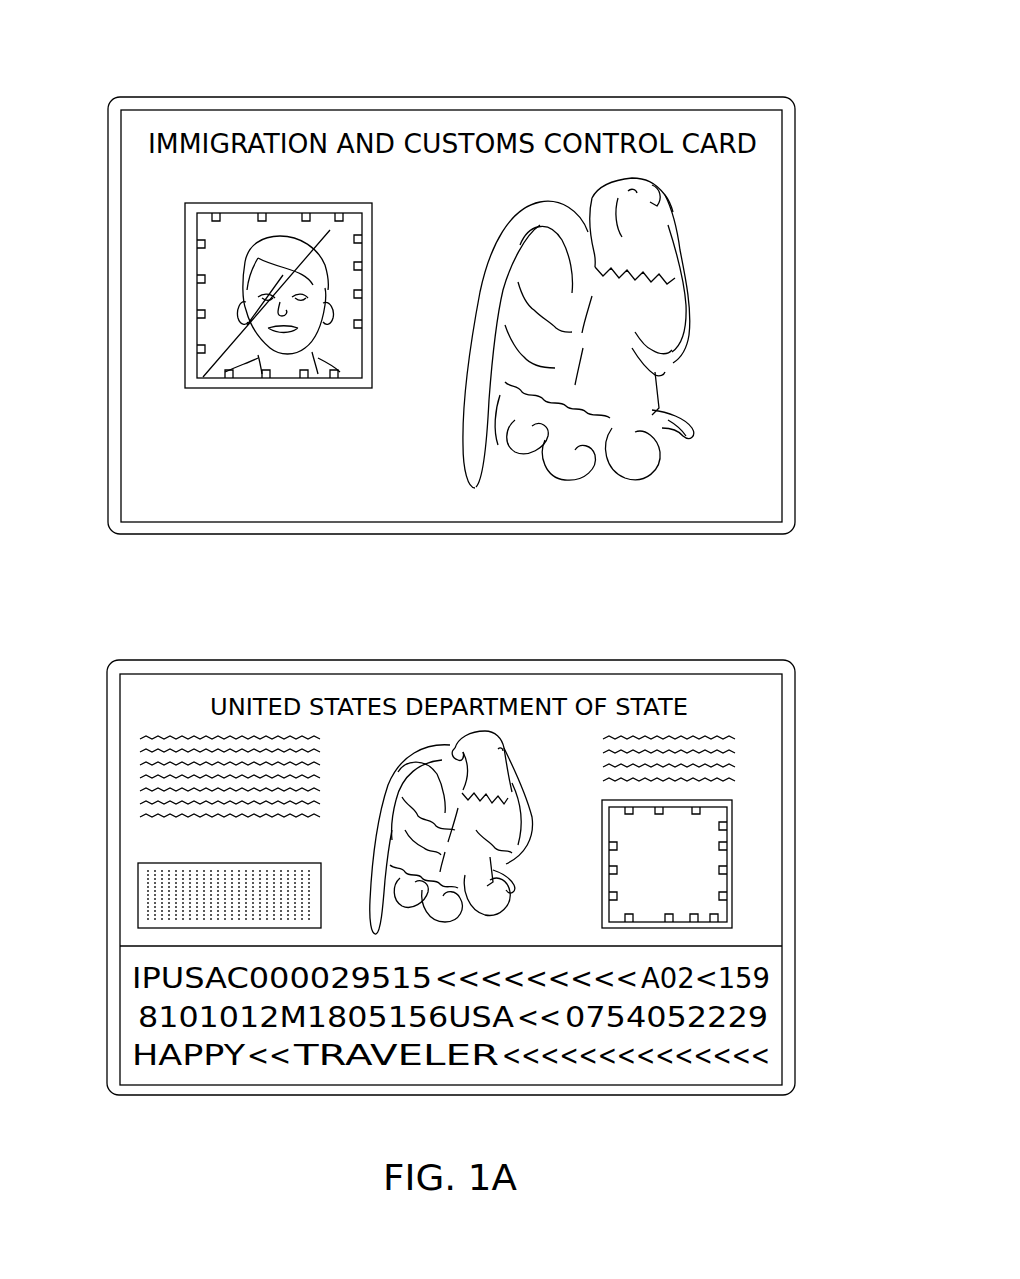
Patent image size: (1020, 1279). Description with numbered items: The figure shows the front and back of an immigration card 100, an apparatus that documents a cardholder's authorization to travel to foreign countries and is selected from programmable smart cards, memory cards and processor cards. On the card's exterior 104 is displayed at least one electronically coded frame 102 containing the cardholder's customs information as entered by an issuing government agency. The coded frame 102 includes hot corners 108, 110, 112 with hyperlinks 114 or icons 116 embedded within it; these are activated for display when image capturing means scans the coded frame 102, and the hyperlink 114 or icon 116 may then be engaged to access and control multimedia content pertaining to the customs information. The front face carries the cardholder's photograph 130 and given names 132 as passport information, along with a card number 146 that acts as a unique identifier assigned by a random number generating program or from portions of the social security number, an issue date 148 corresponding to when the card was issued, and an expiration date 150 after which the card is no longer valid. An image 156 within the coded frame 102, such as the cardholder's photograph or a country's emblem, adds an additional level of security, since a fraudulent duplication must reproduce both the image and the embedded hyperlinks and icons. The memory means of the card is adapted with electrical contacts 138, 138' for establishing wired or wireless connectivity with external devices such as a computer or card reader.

The immigration card 100 is at (413, 66).
The coded frame 102 is at (733, 860).
The immigration card's exterior 104 is at (537, 750).
The hot corner 108 is at (737, 800).
The hot corner 110 is at (735, 946).
The hot corner 112 is at (602, 928).
The hyperlink 114 is at (603, 800).
The icon 116 is at (733, 928).
The photograph 130 is at (222, 297).
The given names 132 is at (208, 412).
The electrical contact 138 is at (357, 1022).
The electrical contact 138' is at (409, 1020).
The card number 146 is at (577, 210).
The issue date 148 is at (512, 281).
The expiration date 150 is at (676, 276).
The image 156 is at (225, 240).